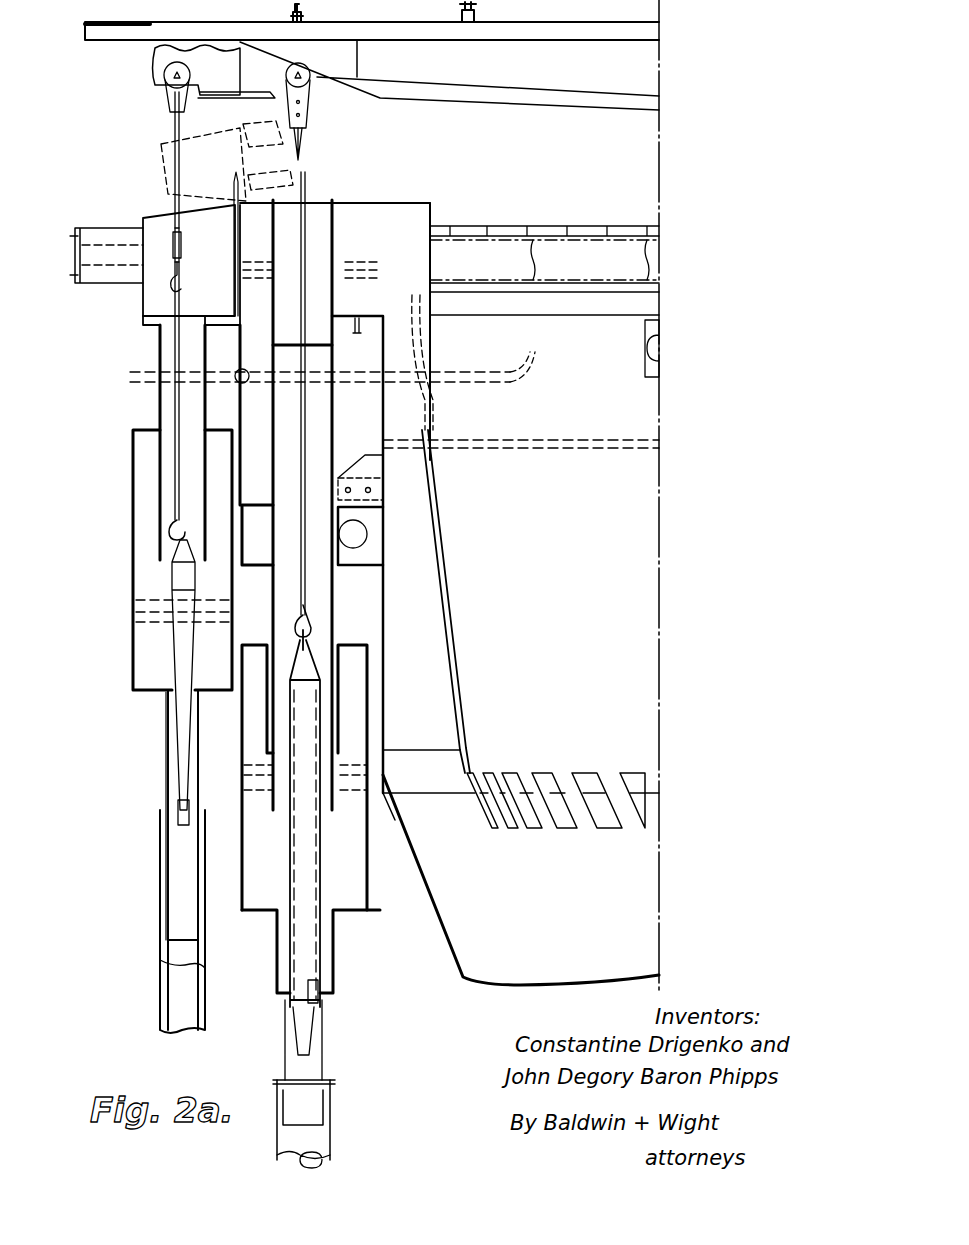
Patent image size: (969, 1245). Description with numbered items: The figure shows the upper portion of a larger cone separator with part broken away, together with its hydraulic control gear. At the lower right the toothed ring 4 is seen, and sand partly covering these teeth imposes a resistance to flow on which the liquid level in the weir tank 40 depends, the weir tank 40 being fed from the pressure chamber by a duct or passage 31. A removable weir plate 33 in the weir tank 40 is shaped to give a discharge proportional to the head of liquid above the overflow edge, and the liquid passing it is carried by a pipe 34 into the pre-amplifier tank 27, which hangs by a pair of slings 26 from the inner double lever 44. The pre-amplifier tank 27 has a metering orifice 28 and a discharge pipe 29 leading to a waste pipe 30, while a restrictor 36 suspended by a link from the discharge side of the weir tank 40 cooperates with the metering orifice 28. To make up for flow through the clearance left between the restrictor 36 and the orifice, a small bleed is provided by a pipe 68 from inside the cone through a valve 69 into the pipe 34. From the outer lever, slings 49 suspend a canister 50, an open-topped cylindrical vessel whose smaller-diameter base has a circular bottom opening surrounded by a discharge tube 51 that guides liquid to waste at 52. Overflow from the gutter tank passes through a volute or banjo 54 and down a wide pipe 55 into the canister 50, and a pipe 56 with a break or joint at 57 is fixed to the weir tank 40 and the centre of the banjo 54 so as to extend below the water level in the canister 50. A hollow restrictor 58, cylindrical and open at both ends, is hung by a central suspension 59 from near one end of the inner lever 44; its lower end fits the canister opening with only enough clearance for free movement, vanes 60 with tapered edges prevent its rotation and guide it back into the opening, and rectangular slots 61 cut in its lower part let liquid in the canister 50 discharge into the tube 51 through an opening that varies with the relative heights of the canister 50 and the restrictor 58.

The toothed ring 4 is at (615, 828).
The slings 26 is at (172, 196).
The pre-amplifier tank 27 is at (133, 490).
The metering orifice 28 is at (168, 708).
The discharge pipe 29 is at (166, 768).
The waste pipe 30 is at (168, 975).
The duct or passage 31 is at (385, 334).
The weir plate 33 is at (232, 248).
The pipe 34 is at (160, 372).
The restrictor 36 is at (185, 600).
The weir tank 40 is at (398, 222).
The inner double lever 44 is at (156, 82).
The slings 49 is at (305, 144).
The canister 50 is at (370, 850).
The discharge tube 51 is at (322, 1050).
The waste 52 is at (326, 1096).
The volute or banjo 54 is at (383, 505).
The wide pipe 55 is at (345, 700).
The pipe 56 is at (273, 452).
The break or joint 57 is at (292, 342).
The hollow restrictor 58 is at (310, 850).
The central suspension 59 is at (307, 186).
The vanes 60 is at (298, 1035).
The rectangular slots 61 is at (318, 988).
The pipe 68 is at (524, 378).
The valve 69 is at (254, 368).